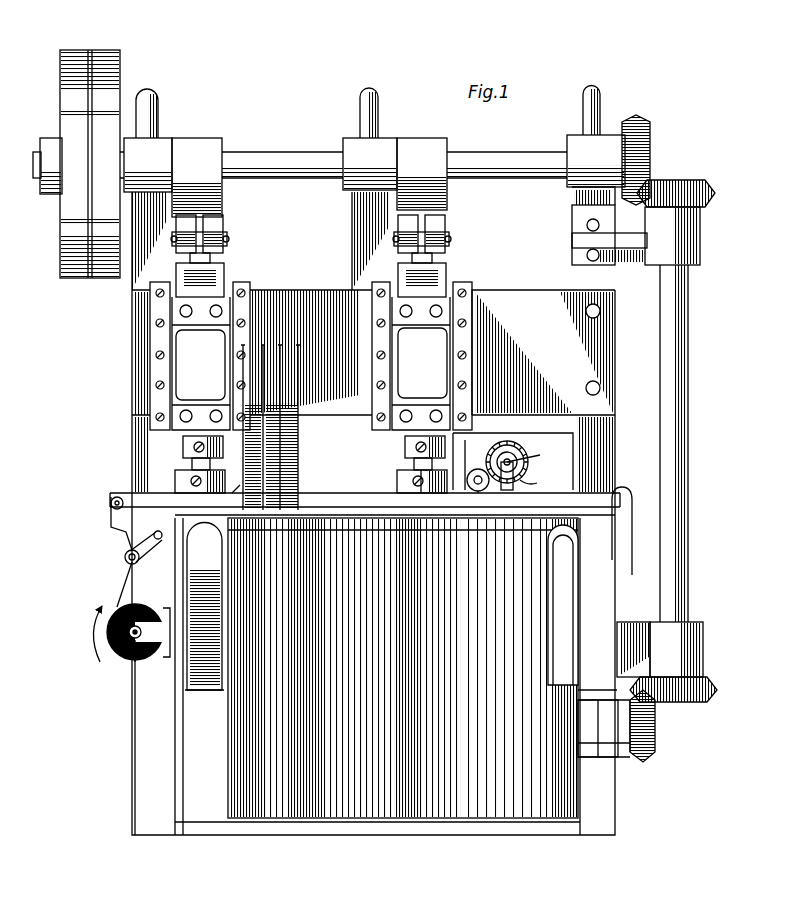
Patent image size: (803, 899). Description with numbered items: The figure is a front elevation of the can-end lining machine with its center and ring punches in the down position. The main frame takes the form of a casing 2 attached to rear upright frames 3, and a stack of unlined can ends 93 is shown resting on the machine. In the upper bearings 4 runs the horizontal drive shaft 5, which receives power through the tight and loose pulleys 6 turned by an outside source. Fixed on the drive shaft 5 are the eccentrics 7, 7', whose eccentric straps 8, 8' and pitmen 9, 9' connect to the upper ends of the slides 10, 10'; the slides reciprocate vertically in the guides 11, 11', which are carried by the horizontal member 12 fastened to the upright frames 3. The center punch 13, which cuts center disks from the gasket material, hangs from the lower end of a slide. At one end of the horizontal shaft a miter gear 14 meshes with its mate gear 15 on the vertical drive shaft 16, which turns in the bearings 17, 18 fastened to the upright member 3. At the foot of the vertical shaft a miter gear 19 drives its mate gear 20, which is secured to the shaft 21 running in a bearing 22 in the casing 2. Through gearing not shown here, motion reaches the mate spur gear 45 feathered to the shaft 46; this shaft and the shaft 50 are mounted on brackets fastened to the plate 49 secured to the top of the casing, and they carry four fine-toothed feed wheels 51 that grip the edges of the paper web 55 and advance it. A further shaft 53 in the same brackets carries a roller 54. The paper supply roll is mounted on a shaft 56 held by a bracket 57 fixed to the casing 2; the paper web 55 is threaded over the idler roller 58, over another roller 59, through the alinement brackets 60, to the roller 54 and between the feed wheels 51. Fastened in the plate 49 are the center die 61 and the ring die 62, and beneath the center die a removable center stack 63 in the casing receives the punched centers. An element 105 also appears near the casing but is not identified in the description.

The casing 2 is at (300, 822).
The rear upright frames 3 is at (132, 450).
The upper bearings 4 is at (170, 148).
The horizontal drive shaft 5 is at (300, 160).
The tight and loose pulleys 6 is at (90, 60).
The eccentric 7 is at (231, 147).
The eccentric 7' is at (507, 147).
The eccentric strap 8 is at (200, 165).
The eccentric strap 8' is at (422, 162).
The pitman 9 is at (335, 547).
The pitman 9' is at (436, 256).
The slide 10 is at (225, 340).
The slide 10' is at (444, 338).
The guide 11 is at (220, 351).
The guide 11' is at (449, 347).
The horizontal member 12 is at (548, 285).
The center punch 13 is at (224, 475).
The miter gear 14 is at (650, 140).
The mate gear 15 is at (705, 195).
The vertical drive shaft 16 is at (688, 377).
The bearing 17 is at (700, 243).
The bearing 18 is at (703, 655).
The miter gear 19 is at (705, 698).
The mate gear 20 is at (648, 758).
The shaft 21 is at (655, 740).
The bearing 22 is at (592, 700).
The mate spur gear 45 is at (510, 448).
The shaft 46 is at (515, 462).
The plate 49 is at (612, 505).
The shaft 50 is at (530, 475).
The feed wheels 51 is at (530, 459).
The shaft 53 is at (478, 493).
The roller 54 is at (476, 470).
The paper web 55 is at (115, 655).
The shaft 56 is at (125, 660).
The bracket 57 is at (160, 660).
The idler roller 58 is at (124, 560).
The roller 59 is at (114, 496).
The alinement brackets 60 is at (150, 493).
The center die 61 is at (243, 482).
The ring die 62 is at (421, 493).
The removable center stack 63 is at (204, 692).
The stack of unlined can ends 93 is at (298, 455).
The bracket 105 is at (582, 700).